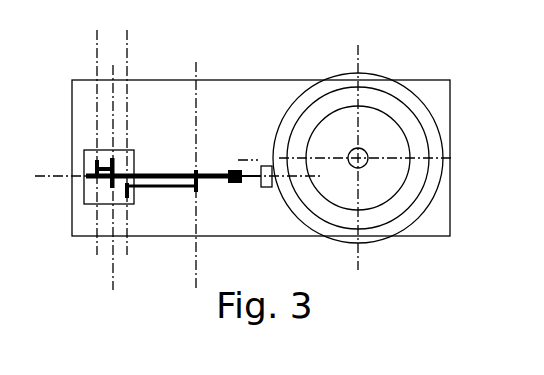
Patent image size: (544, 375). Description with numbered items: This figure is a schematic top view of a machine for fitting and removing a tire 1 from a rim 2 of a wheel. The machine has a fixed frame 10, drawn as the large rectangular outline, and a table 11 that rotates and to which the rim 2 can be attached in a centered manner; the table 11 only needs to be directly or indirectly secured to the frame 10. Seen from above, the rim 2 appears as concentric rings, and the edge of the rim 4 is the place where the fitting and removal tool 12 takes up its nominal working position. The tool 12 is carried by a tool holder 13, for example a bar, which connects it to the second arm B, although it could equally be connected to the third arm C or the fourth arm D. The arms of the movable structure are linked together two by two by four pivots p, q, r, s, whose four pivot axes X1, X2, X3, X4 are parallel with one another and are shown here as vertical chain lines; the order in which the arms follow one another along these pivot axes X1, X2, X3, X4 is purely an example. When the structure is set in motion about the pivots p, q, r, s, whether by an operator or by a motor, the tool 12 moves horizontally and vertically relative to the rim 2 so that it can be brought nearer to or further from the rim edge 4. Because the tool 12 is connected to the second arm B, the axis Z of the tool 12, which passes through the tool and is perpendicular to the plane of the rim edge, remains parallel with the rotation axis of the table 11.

The tire 1 is at (400, 118).
The rim 2 is at (378, 128).
The edge of the rim 4 is at (316, 177).
The fixed frame 10 is at (439, 218).
The table 11 is at (434, 138).
The fitting and removal tool 12 is at (265, 166).
The tool holder 13 is at (236, 184).
The second arm B is at (180, 172).
The third arm C is at (176, 188).
The fourth arm D is at (108, 158).
The pivot p is at (130, 192).
The pivot q is at (96, 166).
The pivot r is at (116, 166).
The pivot s is at (198, 188).
The pivot axis X1 is at (132, 129).
The pivot axis X2 is at (86, 129).
The pivot axis X3 is at (119, 193).
The pivot axis X4 is at (194, 162).
The axis of the tool Z is at (168, 180).